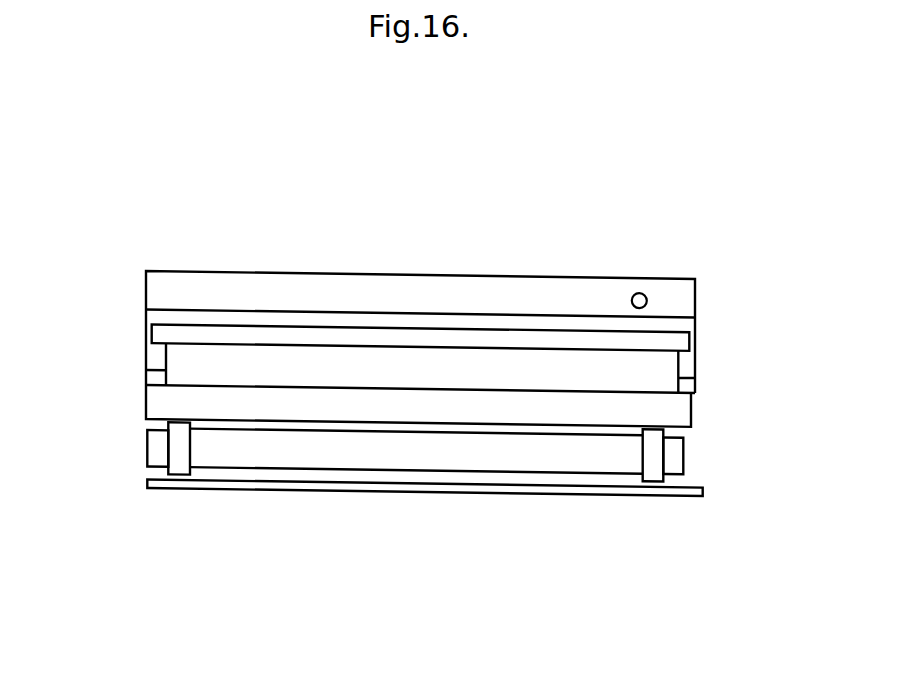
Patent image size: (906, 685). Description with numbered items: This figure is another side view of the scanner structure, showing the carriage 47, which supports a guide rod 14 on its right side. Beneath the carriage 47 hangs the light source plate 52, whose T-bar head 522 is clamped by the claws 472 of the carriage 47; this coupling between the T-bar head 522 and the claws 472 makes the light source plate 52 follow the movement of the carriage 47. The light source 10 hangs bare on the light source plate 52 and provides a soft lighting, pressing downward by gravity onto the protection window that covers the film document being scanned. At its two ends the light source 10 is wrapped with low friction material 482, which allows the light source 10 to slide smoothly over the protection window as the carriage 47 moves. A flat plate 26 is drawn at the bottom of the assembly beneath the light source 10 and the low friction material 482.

The carriage 47 is at (415, 282).
The guide rod 14 is at (630, 291).
The T-bar head 522 is at (210, 338).
The claws 472 is at (150, 356).
The light source plate 52 is at (655, 407).
The low friction material 482 is at (657, 452).
The light source 10 is at (387, 460).
The base plate 26 is at (170, 488).